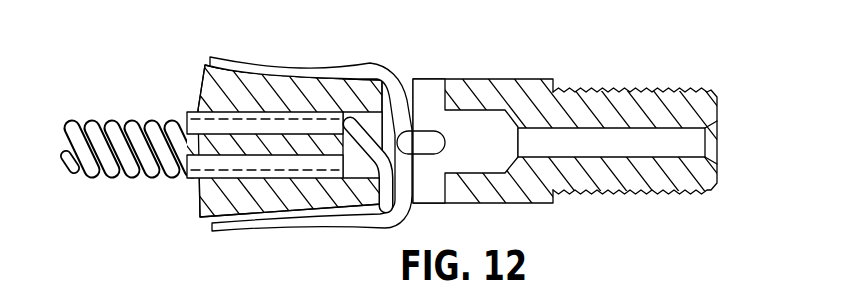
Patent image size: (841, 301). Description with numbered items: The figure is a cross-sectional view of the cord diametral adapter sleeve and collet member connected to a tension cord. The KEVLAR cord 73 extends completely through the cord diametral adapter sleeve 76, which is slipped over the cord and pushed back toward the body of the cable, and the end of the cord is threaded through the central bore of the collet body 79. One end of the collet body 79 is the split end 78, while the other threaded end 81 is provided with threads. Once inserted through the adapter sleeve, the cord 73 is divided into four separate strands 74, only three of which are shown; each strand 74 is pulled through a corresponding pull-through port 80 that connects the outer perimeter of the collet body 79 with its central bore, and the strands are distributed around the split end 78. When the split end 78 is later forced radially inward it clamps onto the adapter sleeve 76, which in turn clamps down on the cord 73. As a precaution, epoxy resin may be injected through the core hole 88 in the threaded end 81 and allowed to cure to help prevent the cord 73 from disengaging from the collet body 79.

The KEVLAR cord 73 is at (108, 127).
The strands 74 is at (390, 70).
The cord diametral adapter sleeve 76 is at (190, 179).
The split end 78 is at (262, 80).
The collet body 79 is at (509, 73).
The pull-through ports 80 is at (440, 78).
The threaded end 81 is at (650, 88).
The core hole 88 is at (605, 148).